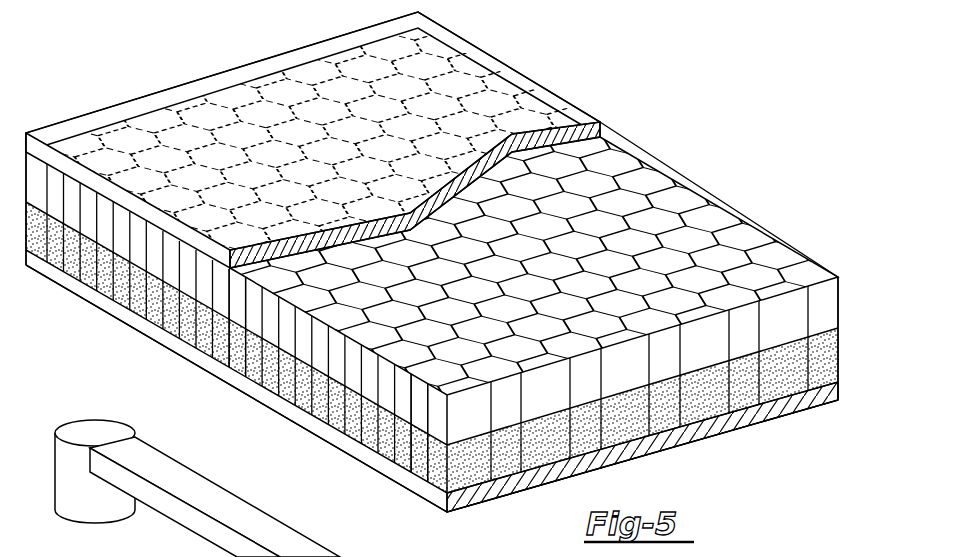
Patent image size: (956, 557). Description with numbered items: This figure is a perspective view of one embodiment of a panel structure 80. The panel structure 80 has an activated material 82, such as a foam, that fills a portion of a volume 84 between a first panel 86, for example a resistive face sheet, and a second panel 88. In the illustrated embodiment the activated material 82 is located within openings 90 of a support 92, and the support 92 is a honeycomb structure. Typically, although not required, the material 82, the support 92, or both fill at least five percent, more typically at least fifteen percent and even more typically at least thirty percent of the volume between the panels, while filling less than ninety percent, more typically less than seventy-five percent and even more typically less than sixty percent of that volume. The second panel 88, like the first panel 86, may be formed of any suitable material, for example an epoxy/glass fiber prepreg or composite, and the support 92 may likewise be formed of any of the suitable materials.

The panel structure 80 is at (624, 70).
The activated material 82 is at (316, 394).
The volume 84 is at (416, 440).
The first panel 86 is at (470, 42).
The second panel 88 is at (677, 441).
The openings 90 is at (267, 327).
The support 92 is at (126, 272).